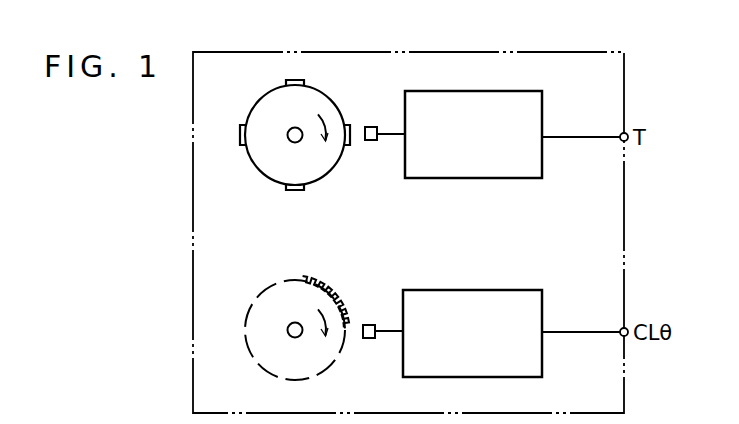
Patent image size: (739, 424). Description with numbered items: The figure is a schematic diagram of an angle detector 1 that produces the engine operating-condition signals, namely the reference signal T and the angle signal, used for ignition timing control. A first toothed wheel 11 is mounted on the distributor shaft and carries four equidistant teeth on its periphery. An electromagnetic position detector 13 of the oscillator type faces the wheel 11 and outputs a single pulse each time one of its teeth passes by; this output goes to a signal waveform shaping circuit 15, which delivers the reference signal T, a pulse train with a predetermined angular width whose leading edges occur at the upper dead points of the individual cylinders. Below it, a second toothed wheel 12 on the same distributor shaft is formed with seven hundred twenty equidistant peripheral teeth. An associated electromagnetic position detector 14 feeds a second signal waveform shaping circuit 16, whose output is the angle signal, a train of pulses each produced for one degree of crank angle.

The angle detector 1 is at (624, 70).
The first toothed wheel 11 is at (322, 95).
The second toothed wheel 12 is at (305, 278).
The electromagnetic position detector 13 is at (370, 127).
The electromagnetic position detector 14 is at (369, 325).
The signal waveform shaping circuit 15 is at (485, 91).
The signal waveform shaping circuit 16 is at (487, 290).